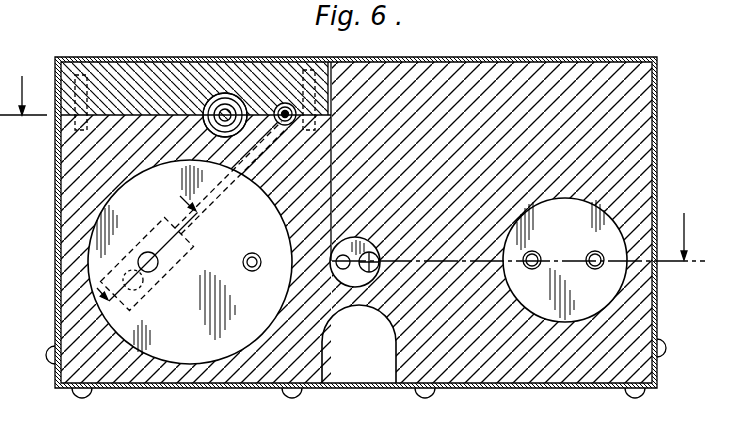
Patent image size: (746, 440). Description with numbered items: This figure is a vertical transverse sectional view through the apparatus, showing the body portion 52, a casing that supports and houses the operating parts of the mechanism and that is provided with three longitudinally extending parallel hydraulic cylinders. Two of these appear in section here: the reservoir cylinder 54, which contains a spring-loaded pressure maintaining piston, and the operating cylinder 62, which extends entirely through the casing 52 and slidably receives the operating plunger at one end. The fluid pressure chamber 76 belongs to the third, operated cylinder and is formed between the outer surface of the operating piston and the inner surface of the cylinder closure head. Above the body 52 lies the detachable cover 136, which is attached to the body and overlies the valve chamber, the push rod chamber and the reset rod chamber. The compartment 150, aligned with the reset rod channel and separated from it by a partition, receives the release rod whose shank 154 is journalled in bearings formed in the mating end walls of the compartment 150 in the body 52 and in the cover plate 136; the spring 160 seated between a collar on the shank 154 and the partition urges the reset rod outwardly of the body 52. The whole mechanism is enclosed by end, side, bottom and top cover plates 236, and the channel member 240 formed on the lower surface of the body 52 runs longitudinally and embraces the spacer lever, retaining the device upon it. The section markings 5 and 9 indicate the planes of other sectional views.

The section line 5- 5 is at (352, 160).
The section line 9- 9 is at (144, 245).
The body portion 52 is at (573, 78).
The reservoir cylinder 54 is at (540, 204).
The operating cylinder 62 is at (354, 285).
The fluid pressure chamber 76 is at (119, 193).
The detachable cover 136 is at (117, 75).
The compartment 150 is at (231, 92).
The shank 154 is at (203, 104).
The spring 160 is at (212, 107).
The cover plates 236 is at (659, 111).
The channel member 240 is at (322, 363).